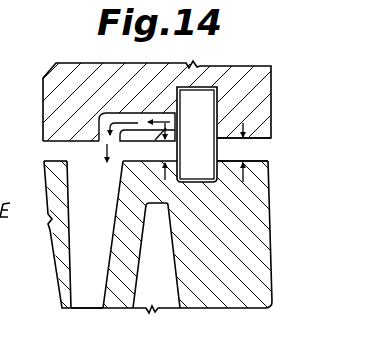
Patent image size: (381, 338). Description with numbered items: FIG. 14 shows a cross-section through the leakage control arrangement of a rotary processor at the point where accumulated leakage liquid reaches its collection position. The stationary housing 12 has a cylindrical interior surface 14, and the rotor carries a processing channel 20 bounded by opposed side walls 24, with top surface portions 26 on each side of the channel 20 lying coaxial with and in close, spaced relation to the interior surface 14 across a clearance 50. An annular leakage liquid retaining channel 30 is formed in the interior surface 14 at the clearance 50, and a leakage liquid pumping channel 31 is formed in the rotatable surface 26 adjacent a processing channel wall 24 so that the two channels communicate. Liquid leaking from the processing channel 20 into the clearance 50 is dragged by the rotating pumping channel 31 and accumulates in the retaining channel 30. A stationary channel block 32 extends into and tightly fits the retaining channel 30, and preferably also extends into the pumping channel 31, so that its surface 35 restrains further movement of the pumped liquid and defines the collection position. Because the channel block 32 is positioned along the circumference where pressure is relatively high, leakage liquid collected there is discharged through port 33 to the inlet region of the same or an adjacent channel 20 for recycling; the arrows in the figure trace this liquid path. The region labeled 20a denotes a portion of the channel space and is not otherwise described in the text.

The housing 12 is at (77, 75).
The cylindrical interior surface 14 is at (44, 142).
The channel 20 is at (190, 169).
The recess in lower block 20a is at (97, 226).
The side wall 24 is at (114, 218).
The top surface portion 26 is at (45, 161).
The leakage liquid retaining channel 30 is at (224, 101).
The leakage liquid pumping channel 31 is at (186, 184).
The stationary member 32 is at (212, 84).
The port 33 is at (135, 116).
The surface of member 35 is at (205, 134).
The clearance 50 is at (245, 147).